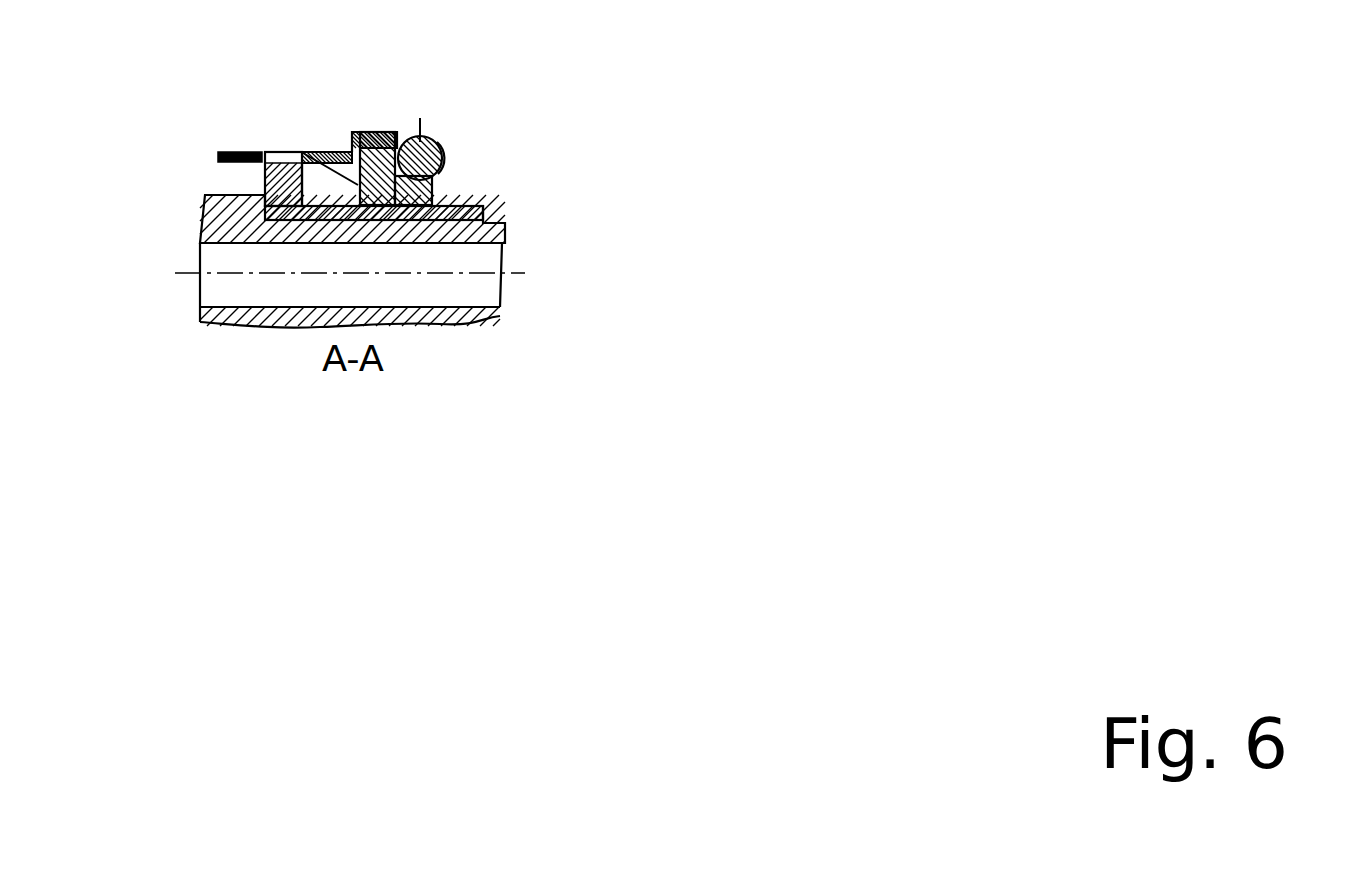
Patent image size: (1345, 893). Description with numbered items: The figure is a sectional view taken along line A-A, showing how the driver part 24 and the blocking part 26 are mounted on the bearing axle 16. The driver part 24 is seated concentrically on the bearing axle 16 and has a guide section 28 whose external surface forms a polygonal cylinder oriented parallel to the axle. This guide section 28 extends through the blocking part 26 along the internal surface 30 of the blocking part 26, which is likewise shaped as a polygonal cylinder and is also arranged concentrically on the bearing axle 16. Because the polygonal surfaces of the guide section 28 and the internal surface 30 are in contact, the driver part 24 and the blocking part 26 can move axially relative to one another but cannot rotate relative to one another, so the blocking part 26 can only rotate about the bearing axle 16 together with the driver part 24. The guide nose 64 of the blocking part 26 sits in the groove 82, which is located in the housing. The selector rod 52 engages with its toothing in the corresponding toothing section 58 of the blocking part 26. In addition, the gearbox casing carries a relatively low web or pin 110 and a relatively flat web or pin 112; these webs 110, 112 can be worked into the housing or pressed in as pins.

The bearing axle 16 is at (500, 308).
The driver part 24 is at (265, 180).
The blocking part 26 is at (433, 200).
The guide section 28 is at (303, 153).
The internal surface 30 is at (400, 207).
The selector rod 52 is at (444, 163).
The toothing section 58 is at (442, 146).
The guide nose 64 is at (375, 131).
The groove 82 is at (395, 139).
The web or pin 110 is at (332, 150).
The web or pin 112 is at (243, 150).